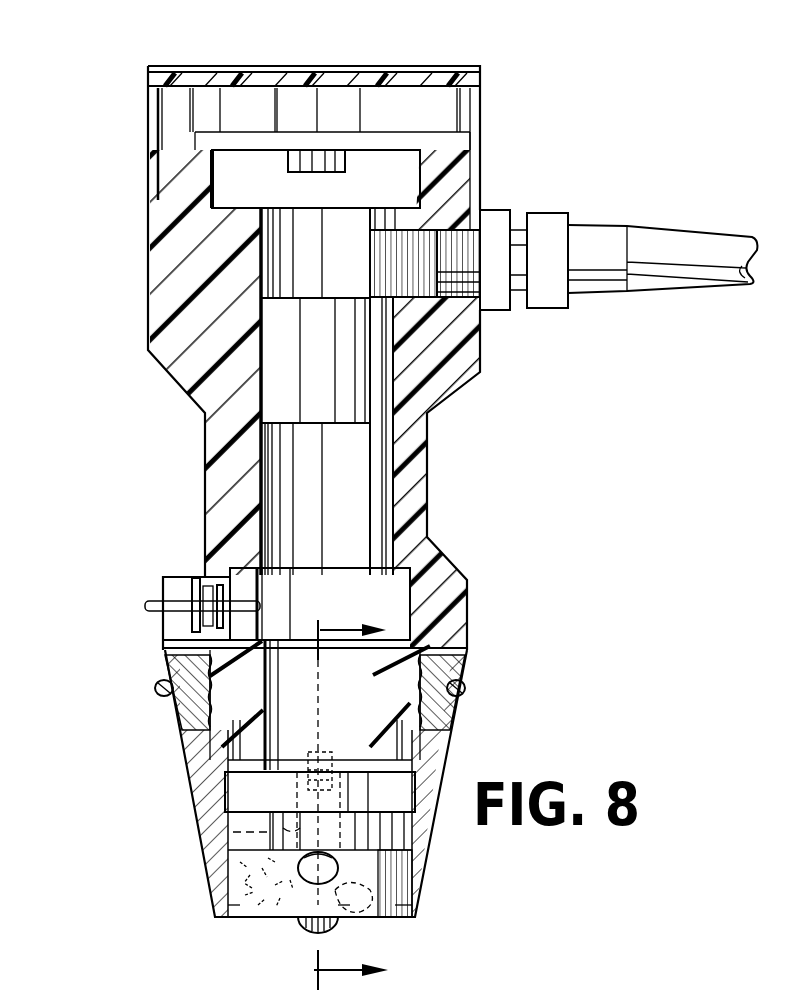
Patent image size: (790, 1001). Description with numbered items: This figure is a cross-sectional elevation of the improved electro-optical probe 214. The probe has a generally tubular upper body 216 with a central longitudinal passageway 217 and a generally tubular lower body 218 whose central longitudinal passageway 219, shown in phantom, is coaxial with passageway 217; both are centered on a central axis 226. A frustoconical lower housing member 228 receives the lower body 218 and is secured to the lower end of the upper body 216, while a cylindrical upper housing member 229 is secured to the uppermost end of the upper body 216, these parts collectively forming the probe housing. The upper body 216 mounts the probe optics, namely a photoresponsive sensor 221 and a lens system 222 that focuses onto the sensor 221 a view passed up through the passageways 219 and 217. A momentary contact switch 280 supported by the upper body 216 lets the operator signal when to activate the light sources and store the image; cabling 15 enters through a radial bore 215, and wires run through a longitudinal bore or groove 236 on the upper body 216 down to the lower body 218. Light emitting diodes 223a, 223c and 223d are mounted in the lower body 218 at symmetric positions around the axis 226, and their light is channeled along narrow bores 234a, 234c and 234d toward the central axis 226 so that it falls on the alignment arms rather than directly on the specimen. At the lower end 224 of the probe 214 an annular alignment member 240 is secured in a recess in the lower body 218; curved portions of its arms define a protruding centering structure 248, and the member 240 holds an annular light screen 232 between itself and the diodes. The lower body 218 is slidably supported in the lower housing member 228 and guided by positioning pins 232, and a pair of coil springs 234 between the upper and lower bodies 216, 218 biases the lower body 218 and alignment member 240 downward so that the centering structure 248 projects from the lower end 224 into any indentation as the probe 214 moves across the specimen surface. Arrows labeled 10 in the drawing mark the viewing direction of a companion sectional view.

The probe 214 is at (67, 209).
The upper body 216 is at (140, 332).
The upper housing member 229 is at (485, 132).
The photoresponsive sensor 221 is at (385, 145).
The lens system 222 is at (343, 315).
The central longitudinal passageway 217 is at (363, 492).
The longitudinal bore or groove 236 is at (395, 461).
The radial bore 215 is at (468, 207).
The cabling 15 is at (605, 245).
The momentary contact switch 280 is at (203, 585).
The central axis 226 is at (305, 677).
The direction arrow 10 is at (354, 795).
The lower housing member 228 is at (180, 738).
The positioning pin 232 is at (192, 757).
The lower end 224 is at (225, 918).
The coil springs 234 is at (318, 752).
The lower body 218 is at (228, 793).
The central longitudinal passageway 219 is at (192, 828).
The light emitting diode 223c is at (222, 870).
The light emitting diode 223d is at (290, 850).
The light emitting diode 223a is at (438, 883).
The annular alignment member 240 is at (285, 925).
The centering structure 248 is at (303, 930).
The bore 234c is at (220, 903).
The bore 234d is at (345, 920).
The bore 234a is at (402, 917).